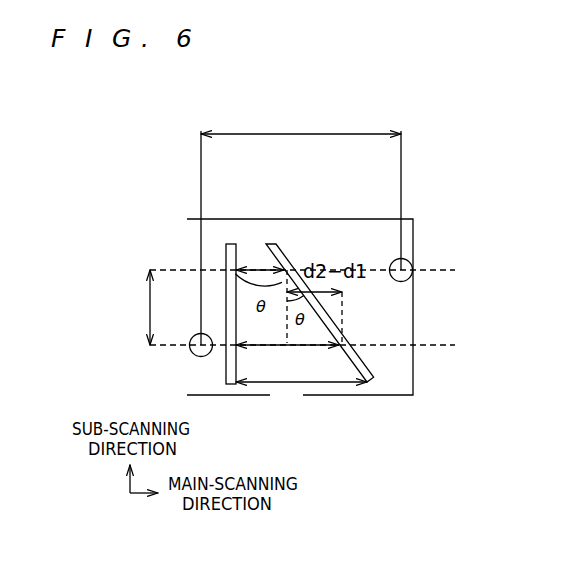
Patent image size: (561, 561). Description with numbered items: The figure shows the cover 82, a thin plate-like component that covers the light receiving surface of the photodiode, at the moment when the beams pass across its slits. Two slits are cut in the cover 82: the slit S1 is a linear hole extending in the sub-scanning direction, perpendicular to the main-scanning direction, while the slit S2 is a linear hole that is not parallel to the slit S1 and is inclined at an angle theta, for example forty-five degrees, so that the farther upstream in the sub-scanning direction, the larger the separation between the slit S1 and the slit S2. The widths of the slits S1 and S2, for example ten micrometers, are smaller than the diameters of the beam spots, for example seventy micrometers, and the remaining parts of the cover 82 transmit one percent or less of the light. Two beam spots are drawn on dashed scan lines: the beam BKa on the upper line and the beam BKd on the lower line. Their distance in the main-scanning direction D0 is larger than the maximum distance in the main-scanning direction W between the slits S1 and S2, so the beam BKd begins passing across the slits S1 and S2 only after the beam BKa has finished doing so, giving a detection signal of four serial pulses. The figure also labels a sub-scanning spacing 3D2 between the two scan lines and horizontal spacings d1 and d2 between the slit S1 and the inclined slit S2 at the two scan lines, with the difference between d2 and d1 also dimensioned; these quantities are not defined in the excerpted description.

The cover 82 is at (187, 241).
The slit S1 is at (229, 244).
The slit S2 is at (271, 244).
The beam BKa is at (411, 264).
The beam BKd is at (193, 353).
The distance in the main-scanning direction between the beams D0 is at (301, 224).
The distance 3D2 is at (126, 307).
The distance d1 is at (260, 256).
The distance d2 is at (287, 360).
The maximum distance in the main-scanning direction between the slits W is at (301, 397).